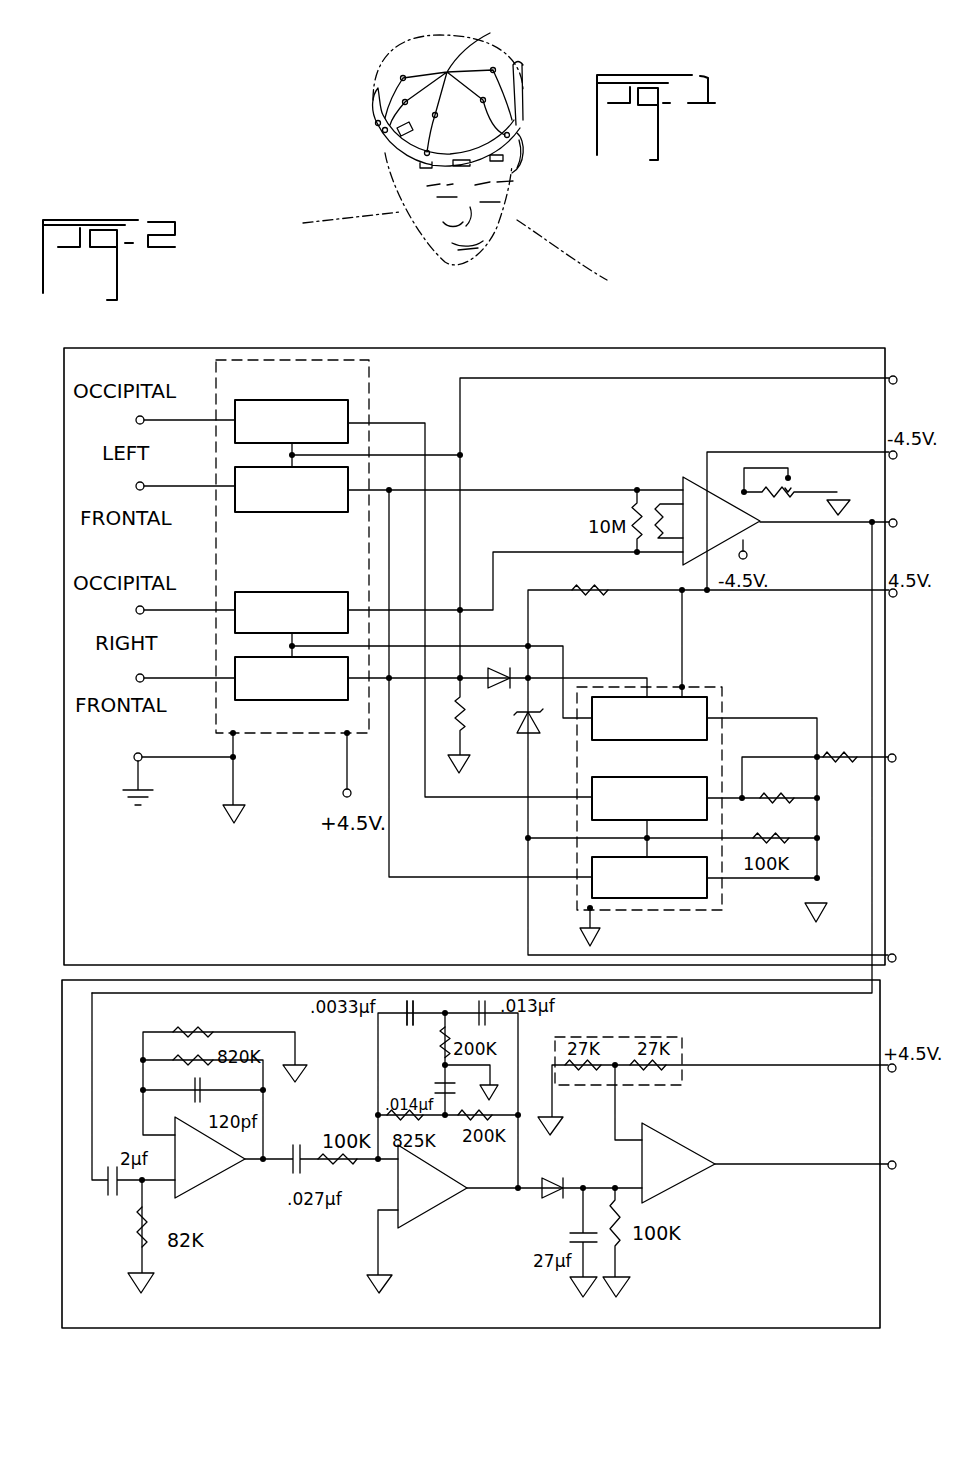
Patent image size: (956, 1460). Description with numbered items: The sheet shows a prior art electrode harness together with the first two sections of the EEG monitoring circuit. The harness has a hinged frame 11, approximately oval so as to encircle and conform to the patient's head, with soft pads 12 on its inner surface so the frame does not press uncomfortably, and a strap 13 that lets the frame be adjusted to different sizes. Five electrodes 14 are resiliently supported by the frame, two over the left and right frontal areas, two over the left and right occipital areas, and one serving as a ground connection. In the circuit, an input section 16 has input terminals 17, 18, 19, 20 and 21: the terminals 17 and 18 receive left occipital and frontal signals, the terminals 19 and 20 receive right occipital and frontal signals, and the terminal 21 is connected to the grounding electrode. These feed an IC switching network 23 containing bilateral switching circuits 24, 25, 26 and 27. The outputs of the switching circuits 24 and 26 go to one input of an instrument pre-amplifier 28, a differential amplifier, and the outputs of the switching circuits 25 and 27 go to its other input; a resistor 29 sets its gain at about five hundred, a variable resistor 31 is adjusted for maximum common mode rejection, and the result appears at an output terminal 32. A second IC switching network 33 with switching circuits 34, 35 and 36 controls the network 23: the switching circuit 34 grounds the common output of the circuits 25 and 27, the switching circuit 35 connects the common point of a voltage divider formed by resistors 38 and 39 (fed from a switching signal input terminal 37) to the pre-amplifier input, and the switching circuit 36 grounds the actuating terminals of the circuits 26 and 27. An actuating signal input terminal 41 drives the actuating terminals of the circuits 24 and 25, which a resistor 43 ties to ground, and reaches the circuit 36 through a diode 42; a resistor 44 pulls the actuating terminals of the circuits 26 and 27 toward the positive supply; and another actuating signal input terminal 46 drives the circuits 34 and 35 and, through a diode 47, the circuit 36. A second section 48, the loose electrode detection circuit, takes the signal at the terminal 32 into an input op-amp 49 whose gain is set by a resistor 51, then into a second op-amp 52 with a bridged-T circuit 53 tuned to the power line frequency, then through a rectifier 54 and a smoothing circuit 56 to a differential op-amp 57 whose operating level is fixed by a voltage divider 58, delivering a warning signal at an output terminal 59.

In FIG. 1, the hinged frame 11 is at (520, 112).
In FIG. 1, the soft pads 12 is at (385, 142).
In FIG. 1, the strap 13 is at (512, 170).
In FIG. 1, the electrodes 14 is at (453, 90).
In FIG. 2, the input section 16 is at (118, 347).
In FIG. 2, the input terminal 17 is at (136, 420).
In FIG. 2, the input terminal 18 is at (136, 486).
In FIG. 2, the input terminal 19 is at (136, 610).
In FIG. 2, the input terminal 20 is at (136, 678).
In FIG. 2, the input terminal 21 is at (134, 757).
In FIG. 2, the integrated circuit switching network 23 is at (369, 395).
In FIG. 2, the switching circuit 24 is at (280, 400).
In FIG. 2, the switching circuit 25 is at (290, 512).
In FIG. 2, the switching circuit 26 is at (275, 592).
In FIG. 2, the switching circuit 27 is at (320, 700).
In FIG. 2, the instrument pre-amplifier 28 is at (724, 500).
In FIG. 2, the resistor 29 is at (657, 505).
In FIG. 2, the variable resistor 31 is at (785, 494).
In FIG. 2, the output terminal 32 is at (905, 508).
In FIG. 2, the IC switching network 33 is at (722, 700).
In FIG. 2, the switching circuit 34 is at (660, 898).
In FIG. 2, the switching circuit 35 is at (655, 777).
In FIG. 2, the switching circuit 36 is at (630, 740).
In FIG. 2, the switching signal input terminal 37 is at (905, 743).
In FIG. 2, the resistor 38 is at (840, 763).
In FIG. 2, the resistor 39 is at (775, 775).
In FIG. 2, the actuating signal input terminal 41 is at (893, 376).
In FIG. 2, the diode 42 is at (504, 666).
In FIG. 2, the resistor 43 is at (479, 712).
In FIG. 2, the resistor 44 is at (600, 596).
In FIG. 2, the actuating signal input terminal 46 is at (905, 943).
In FIG. 2, the diode 47 is at (533, 735).
In FIG. 2, the second section 48 is at (471, 1154).
In FIG. 2, the input operational amplifier 49 is at (215, 1185).
In FIG. 2, the resistor 51 is at (195, 1025).
In FIG. 2, the second op-amp 52 is at (430, 1210).
In FIG. 2, the bridged-T circuit 53 is at (407, 1041).
In FIG. 2, the rectifier 54 is at (550, 1200).
In FIG. 2, the smoothing circuit 56 is at (592, 1242).
In FIG. 2, the op-amp 57 is at (690, 1140).
In FIG. 2, the voltage divider 58 is at (682, 1047).
In FIG. 2, the output terminal 59 is at (905, 1150).